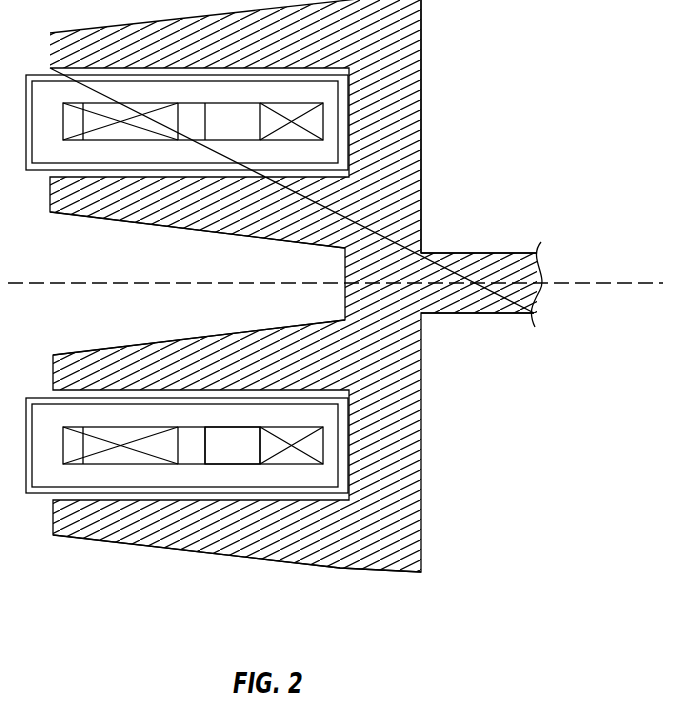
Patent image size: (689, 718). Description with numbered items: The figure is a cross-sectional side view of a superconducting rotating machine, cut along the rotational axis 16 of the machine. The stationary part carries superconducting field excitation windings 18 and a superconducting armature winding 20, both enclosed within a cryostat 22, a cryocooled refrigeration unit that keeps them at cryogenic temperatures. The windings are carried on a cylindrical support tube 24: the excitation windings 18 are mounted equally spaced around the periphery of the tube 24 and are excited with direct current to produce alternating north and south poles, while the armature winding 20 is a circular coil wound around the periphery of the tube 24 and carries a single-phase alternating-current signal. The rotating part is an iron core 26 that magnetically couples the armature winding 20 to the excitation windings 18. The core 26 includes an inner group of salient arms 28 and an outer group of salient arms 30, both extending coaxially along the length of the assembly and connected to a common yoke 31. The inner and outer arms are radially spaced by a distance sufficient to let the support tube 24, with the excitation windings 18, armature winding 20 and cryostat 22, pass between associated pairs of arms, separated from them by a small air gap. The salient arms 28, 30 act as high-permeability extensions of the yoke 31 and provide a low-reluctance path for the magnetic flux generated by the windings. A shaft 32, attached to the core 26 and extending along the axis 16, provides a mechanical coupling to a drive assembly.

The rotational axis 16 is at (580, 283).
The superconducting field excitation windings 18 is at (155, 108).
The superconducting armature winding 20 is at (315, 127).
The cryostat 22 is at (288, 90).
The cylindrical support tube 24 is at (237, 450).
The iron core 26 is at (423, 525).
The inner group of salient arms 28 is at (185, 228).
The outer group of salient arms 30 is at (190, 545).
The common yoke 31 is at (422, 130).
The shaft 32 is at (470, 312).